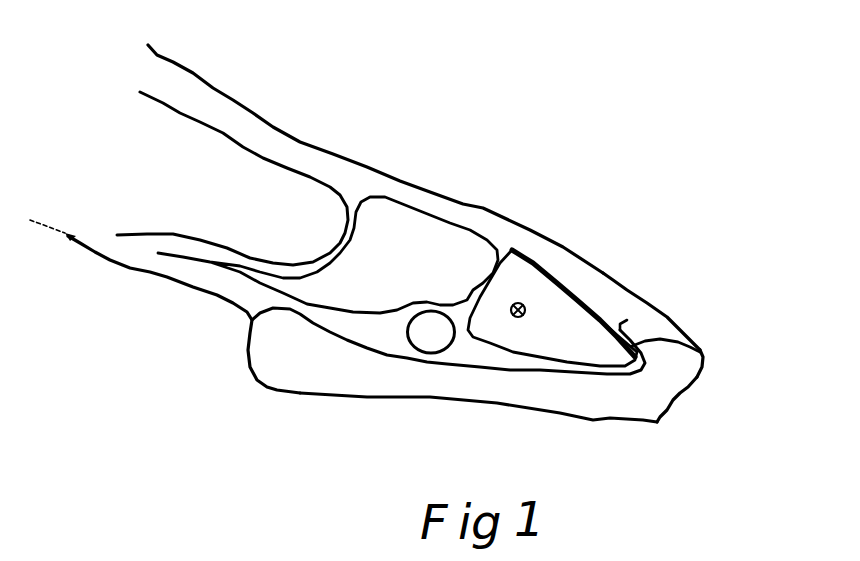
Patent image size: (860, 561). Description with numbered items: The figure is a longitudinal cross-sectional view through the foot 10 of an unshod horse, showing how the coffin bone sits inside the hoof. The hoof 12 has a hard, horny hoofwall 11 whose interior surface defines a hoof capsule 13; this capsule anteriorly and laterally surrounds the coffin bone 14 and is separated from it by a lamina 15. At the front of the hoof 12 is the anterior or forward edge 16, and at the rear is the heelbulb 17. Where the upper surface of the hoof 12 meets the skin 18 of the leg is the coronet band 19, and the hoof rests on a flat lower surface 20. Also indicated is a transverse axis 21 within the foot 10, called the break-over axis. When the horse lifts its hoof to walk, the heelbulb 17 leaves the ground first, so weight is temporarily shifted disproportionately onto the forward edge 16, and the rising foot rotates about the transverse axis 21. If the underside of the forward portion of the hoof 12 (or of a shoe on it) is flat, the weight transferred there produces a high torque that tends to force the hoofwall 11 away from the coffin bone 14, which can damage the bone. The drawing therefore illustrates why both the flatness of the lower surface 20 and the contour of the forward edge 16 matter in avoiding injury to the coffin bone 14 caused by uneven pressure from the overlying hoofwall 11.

The foot 10 is at (254, 117).
The hoofwall 11 is at (675, 289).
The hoof 12 is at (651, 282).
The hoof capsule 13 is at (448, 390).
The coffin bone 14 is at (569, 239).
The lamina 15 is at (701, 338).
The anterior edge 16 is at (715, 406).
The heelbulb 17 is at (182, 332).
The skin 18 is at (360, 179).
The coronet band 19 is at (552, 264).
The lower surface 20 is at (479, 439).
The transverse axis 21 is at (453, 392).